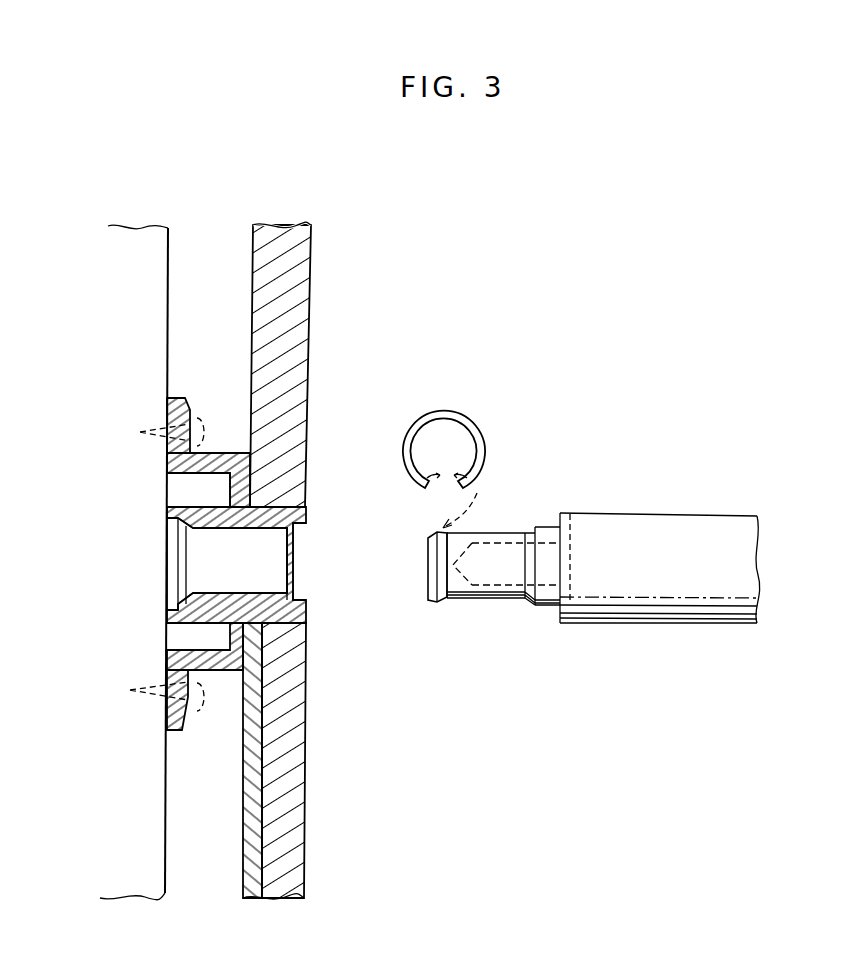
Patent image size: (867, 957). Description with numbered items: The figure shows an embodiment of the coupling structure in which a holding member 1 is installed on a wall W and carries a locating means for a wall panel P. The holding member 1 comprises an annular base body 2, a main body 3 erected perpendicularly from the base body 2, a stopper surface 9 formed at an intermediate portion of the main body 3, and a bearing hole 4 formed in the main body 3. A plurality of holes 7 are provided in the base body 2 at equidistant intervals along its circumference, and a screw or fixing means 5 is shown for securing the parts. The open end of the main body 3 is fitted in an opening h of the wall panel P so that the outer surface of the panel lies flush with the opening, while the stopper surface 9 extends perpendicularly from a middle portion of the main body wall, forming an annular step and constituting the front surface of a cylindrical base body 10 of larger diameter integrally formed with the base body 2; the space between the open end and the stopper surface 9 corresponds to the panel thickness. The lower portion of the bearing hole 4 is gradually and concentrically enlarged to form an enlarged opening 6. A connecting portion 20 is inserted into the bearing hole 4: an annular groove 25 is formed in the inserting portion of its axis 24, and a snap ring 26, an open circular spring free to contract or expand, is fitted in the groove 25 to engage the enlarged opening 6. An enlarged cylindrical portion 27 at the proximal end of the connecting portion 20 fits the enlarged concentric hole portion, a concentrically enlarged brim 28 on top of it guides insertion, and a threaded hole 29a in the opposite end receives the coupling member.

The holding member 1 is at (319, 619).
The base body 2 is at (183, 690).
The main body 3 is at (268, 594).
The bearing hole 4 is at (277, 550).
The fixing means 5 is at (130, 561).
The enlarged opening 6 is at (180, 542).
The holes 7 is at (165, 698).
The stopper surface 9 is at (252, 466).
The cylindrical base body 10 is at (217, 453).
The opening h is at (270, 503).
The wall panel P is at (310, 314).
The wall W is at (128, 292).
The connecting portion 20 is at (594, 558).
The axis 24 is at (497, 600).
The annular groove 25 is at (440, 592).
The snap ring 26 is at (478, 424).
The enlarged cylindrical portion 27 is at (548, 608).
The brim 28 is at (568, 620).
The hole 29a is at (525, 533).